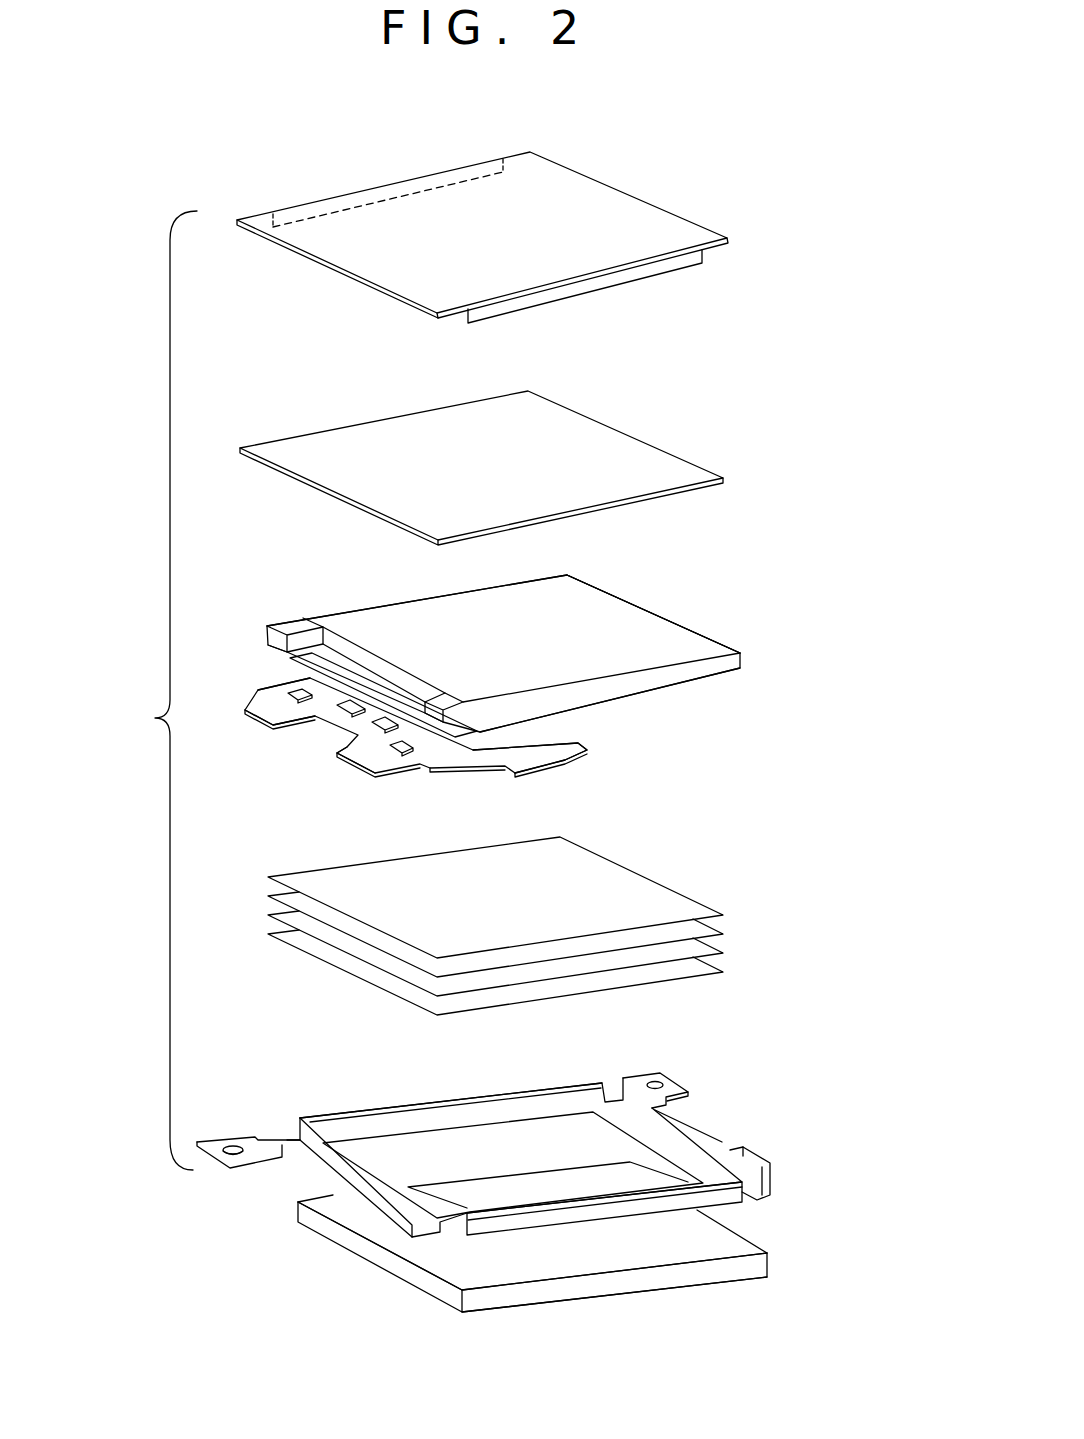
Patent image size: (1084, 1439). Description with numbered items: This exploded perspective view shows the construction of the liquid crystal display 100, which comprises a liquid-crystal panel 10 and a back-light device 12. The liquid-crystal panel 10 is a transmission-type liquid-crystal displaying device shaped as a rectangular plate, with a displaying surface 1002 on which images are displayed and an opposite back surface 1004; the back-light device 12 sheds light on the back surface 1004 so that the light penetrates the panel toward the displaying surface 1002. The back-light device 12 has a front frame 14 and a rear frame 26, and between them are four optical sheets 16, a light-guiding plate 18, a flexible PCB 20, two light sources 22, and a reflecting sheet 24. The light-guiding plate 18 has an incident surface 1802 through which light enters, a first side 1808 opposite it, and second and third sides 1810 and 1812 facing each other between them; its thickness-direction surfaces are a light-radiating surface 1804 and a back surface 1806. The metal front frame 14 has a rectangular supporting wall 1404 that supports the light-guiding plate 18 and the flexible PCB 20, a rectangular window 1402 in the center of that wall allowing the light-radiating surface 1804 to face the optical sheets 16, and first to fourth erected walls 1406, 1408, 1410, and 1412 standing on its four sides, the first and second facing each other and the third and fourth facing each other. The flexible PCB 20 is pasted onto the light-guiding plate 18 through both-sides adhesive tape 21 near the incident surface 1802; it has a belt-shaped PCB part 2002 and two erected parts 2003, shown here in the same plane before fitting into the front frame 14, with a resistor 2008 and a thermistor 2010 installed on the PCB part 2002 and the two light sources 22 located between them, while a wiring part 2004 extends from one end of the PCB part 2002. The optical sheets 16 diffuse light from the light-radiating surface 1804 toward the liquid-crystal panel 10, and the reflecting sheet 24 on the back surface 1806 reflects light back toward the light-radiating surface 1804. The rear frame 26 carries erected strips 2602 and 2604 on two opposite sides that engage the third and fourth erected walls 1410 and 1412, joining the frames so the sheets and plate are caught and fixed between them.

The liquid crystal display 100 is at (127, 288).
The back-light device 12 is at (160, 690).
The liquid-crystal panel 10 is at (275, 1227).
The displaying surface 1002 is at (578, 1298).
The back surface 1004 is at (608, 1258).
The front frame 14 is at (715, 1090).
The rectangular window 1402 is at (405, 1140).
The supporting wall 1404 is at (637, 1122).
The first erected wall 1406 is at (357, 1198).
The second erected wall 1408 is at (730, 1152).
The third erected wall 1410 is at (498, 1105).
The fourth erected wall 1412 is at (543, 1218).
The optical sheets 16 is at (745, 925).
The light-guiding plate 18 is at (730, 645).
The incident surface 1802 is at (352, 650).
The light-radiating surface 1804 is at (643, 690).
The back surface 1806 is at (623, 615).
The first side 1808 is at (682, 620).
The second side 1810 is at (473, 592).
The third side 1812 is at (587, 692).
The flexible PCB 20 is at (448, 772).
The PCB part 2002 is at (328, 711).
The erected parts 2003 is at (293, 693).
The wiring part 2004 is at (580, 763).
The resistor 2008 is at (307, 708).
The thermistor 2010 is at (395, 752).
The both-sides adhesive tape 21 is at (313, 662).
The light sources 22 is at (372, 727).
The reflecting sheet 24 is at (652, 463).
The rear frame 26 is at (640, 213).
The erected strip 2602 is at (603, 290).
The erected strip 2604 is at (390, 200).